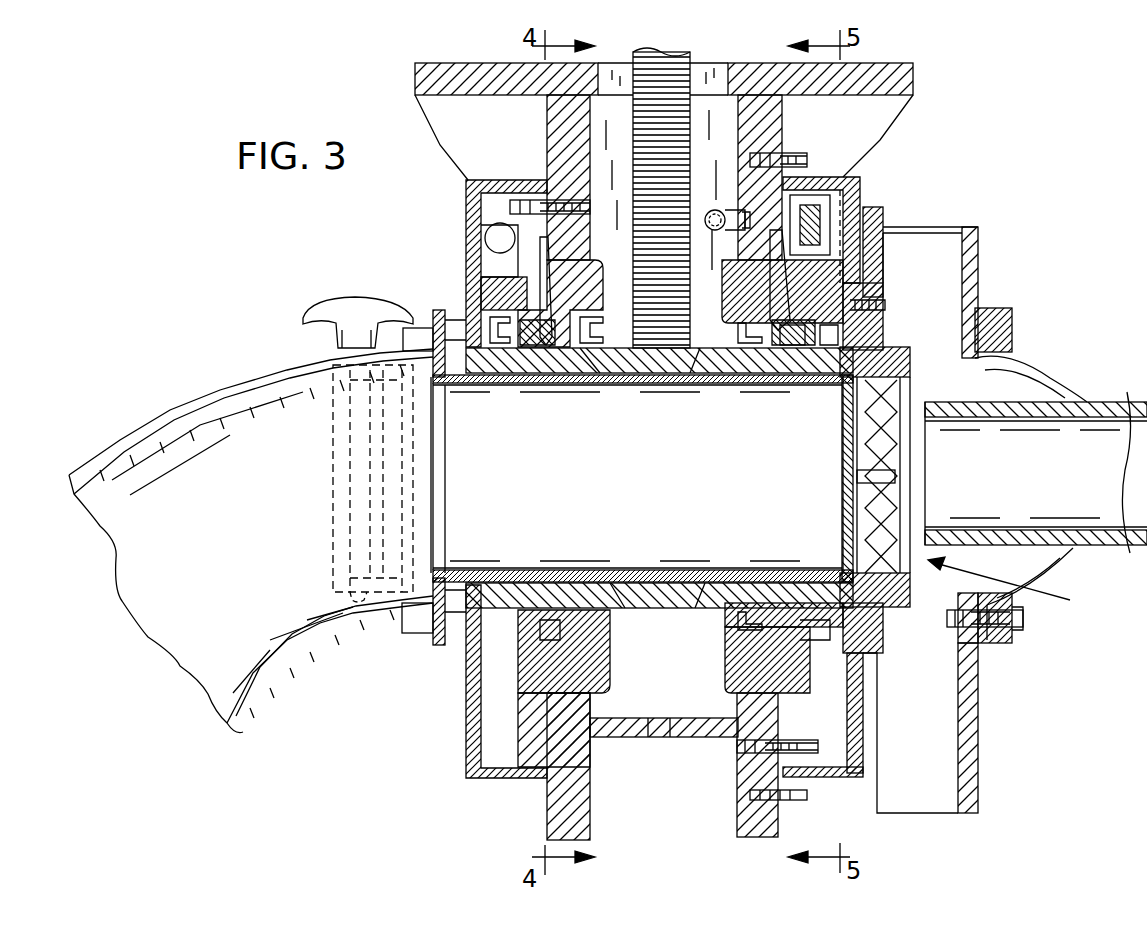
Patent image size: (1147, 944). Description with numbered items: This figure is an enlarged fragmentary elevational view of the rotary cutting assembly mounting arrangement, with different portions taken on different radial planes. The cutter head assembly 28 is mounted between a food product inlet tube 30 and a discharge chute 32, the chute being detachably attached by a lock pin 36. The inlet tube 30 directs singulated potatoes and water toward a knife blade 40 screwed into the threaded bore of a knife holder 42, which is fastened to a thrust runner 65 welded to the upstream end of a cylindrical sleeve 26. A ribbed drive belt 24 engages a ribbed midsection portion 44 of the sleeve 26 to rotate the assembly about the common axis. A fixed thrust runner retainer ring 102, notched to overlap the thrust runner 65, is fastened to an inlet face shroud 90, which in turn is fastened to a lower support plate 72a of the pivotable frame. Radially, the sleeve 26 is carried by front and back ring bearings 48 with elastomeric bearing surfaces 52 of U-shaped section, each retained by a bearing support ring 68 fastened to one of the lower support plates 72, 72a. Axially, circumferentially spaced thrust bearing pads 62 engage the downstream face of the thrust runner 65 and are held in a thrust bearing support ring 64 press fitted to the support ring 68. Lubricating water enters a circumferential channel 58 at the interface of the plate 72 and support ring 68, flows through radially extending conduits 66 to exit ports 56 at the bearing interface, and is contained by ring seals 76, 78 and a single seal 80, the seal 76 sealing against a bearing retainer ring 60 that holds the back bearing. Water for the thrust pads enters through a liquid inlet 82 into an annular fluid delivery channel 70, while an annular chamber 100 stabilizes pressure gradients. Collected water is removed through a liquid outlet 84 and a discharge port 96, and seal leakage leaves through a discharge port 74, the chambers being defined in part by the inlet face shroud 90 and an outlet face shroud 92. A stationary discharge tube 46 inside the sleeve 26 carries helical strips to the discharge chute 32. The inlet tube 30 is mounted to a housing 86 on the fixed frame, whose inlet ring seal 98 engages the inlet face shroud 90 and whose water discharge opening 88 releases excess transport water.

The drive belt 24 is at (662, 50).
The cylindrical sleeve 26 is at (725, 383).
The cutter head assembly 28 is at (1013, 585).
The food product inlet tube 30 is at (1108, 400).
The discharge chute 32 is at (135, 430).
The lock pin assembly 36 is at (318, 305).
The knife blade 40 is at (870, 482).
The knife holder 42 is at (905, 370).
The ribbed midsection portion 44 is at (625, 608).
The stationary discharge tube 46 is at (478, 385).
The front ring bearing 48 is at (792, 383).
The bearing surface 52 is at (822, 375).
The exit port 56 is at (730, 300).
The circumferential channel 58 is at (775, 250).
The bearing retainer ring 60 is at (475, 270).
The thrust bearing pads 62 is at (880, 660).
The thrust bearing support ring 64 is at (880, 713).
The thrust runner 65 is at (945, 250).
The radially inwardly extending conduits 66 is at (762, 240).
The bearing support ring 68 is at (805, 195).
The annular fluid delivery channel 70 is at (870, 260).
The lower support plate 72 is at (547, 120).
The lower support plate 72a is at (737, 832).
The discharge port 74 is at (658, 740).
The ring seal 76 is at (470, 625).
The ring seal 78 is at (612, 622).
The seal 80 is at (742, 605).
The liquid inlet 82 is at (713, 210).
The liquid outlet 84 is at (835, 215).
The housing 86 is at (985, 780).
The water discharge opening 88 is at (945, 795).
The inlet face shroud 90 is at (835, 765).
The outlet face shroud 92 is at (470, 765).
The discharge port 96 is at (470, 255).
The inlet ring seal 98 is at (870, 757).
The annular chamber 100 is at (820, 620).
The thrust runner retainer ring 102 is at (882, 250).